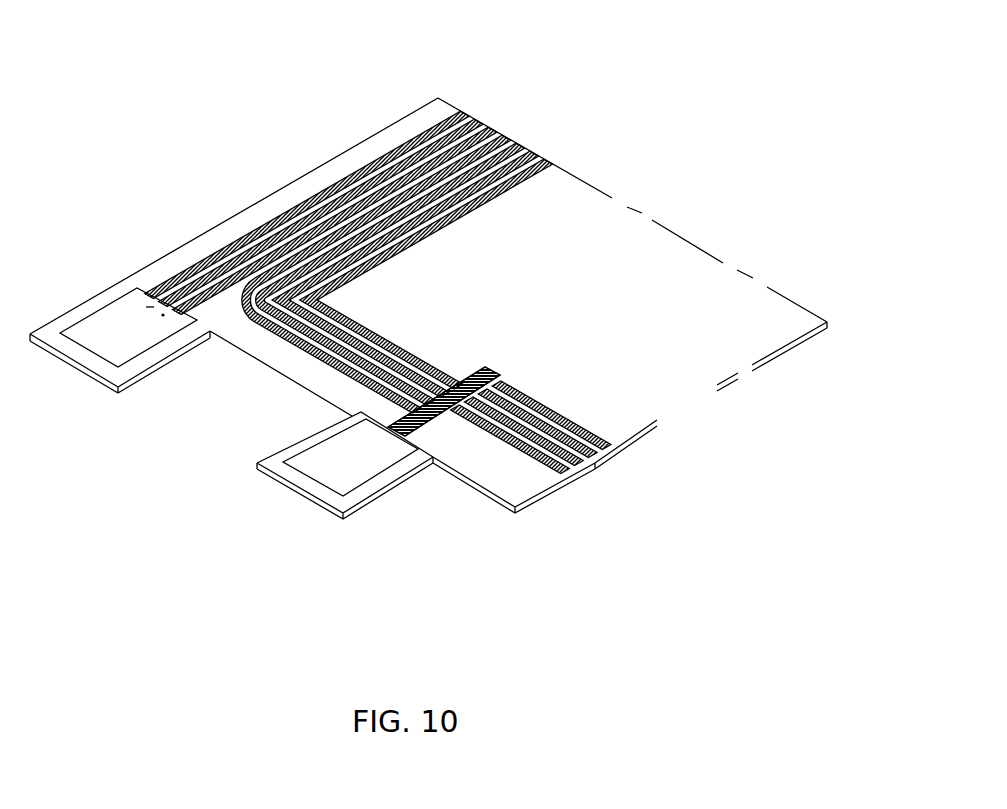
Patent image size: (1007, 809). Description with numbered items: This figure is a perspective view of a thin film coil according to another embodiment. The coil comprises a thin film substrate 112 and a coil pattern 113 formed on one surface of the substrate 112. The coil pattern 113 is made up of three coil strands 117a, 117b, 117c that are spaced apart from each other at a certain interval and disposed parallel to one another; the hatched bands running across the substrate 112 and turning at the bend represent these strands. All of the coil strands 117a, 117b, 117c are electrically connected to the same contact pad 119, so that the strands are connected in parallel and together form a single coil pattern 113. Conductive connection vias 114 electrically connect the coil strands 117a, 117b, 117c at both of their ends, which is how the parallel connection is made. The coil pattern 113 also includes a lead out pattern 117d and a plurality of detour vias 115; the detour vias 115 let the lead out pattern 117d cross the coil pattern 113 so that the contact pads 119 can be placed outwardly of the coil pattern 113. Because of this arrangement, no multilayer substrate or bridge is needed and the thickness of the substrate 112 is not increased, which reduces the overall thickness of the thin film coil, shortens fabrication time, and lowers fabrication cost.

The thin film substrate 112 is at (277, 352).
The coil pattern 113 is at (349, 221).
The conductive connection via 114 is at (150, 307).
The detour via 115 is at (472, 384).
The coil strand 117a is at (198, 273).
The coil strand 117b is at (250, 253).
The coil strand 117c is at (305, 232).
The lead out pattern 117d is at (422, 223).
The contact pad 119 is at (125, 340).